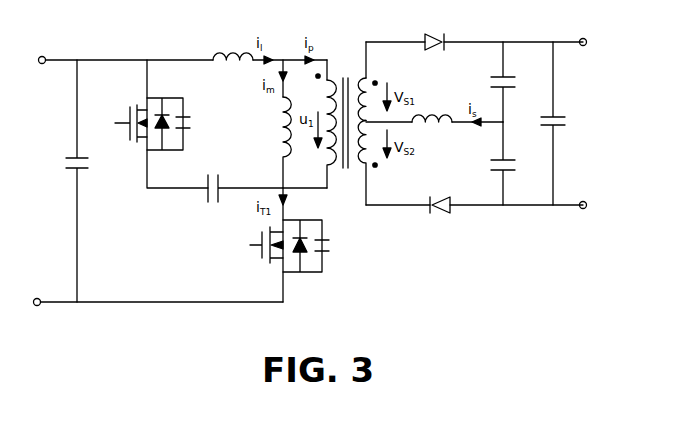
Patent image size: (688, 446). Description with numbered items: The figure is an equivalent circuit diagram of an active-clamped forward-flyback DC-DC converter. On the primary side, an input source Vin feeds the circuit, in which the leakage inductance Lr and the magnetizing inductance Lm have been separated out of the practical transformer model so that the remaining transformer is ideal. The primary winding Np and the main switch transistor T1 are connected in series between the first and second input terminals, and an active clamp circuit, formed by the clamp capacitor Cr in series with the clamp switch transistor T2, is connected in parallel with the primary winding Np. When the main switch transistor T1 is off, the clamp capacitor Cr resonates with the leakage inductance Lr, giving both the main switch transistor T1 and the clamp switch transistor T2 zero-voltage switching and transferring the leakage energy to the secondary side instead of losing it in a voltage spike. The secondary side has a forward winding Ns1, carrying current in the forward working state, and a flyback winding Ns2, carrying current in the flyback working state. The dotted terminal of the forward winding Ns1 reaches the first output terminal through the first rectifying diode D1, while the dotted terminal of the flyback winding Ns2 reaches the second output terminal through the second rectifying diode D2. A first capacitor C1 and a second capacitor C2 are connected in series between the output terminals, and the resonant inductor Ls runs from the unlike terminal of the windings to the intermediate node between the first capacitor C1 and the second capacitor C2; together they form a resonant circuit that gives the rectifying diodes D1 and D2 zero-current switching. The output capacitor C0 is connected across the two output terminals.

The input voltage source / input capacitor Vin is at (38, 178).
The clamp switch transistor T2 is at (105, 105).
The main switch transistor T1 is at (287, 245).
The clamp capacitor Cr is at (258, 192).
The leakage inductance Lr is at (270, 68).
The magnetizing inductance Lm is at (268, 124).
The primary winding Np is at (315, 124).
The forward winding Ns1 is at (376, 81).
The flyback winding Ns2 is at (376, 163).
The resonant inductor Ls is at (434, 131).
The first rectifying diode D1 is at (474, 49).
The second rectifying diode D2 is at (474, 216).
The first capacitor C1 is at (510, 82).
The second capacitor C2 is at (507, 163).
The output capacitor C0 is at (542, 123).